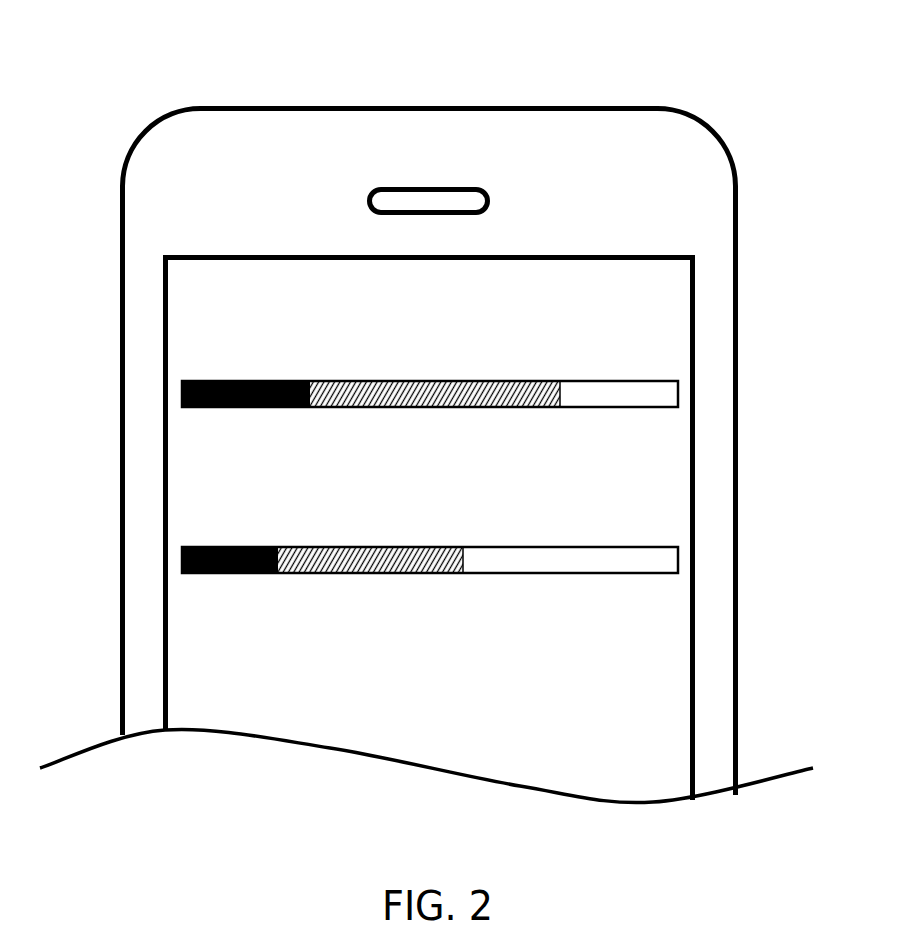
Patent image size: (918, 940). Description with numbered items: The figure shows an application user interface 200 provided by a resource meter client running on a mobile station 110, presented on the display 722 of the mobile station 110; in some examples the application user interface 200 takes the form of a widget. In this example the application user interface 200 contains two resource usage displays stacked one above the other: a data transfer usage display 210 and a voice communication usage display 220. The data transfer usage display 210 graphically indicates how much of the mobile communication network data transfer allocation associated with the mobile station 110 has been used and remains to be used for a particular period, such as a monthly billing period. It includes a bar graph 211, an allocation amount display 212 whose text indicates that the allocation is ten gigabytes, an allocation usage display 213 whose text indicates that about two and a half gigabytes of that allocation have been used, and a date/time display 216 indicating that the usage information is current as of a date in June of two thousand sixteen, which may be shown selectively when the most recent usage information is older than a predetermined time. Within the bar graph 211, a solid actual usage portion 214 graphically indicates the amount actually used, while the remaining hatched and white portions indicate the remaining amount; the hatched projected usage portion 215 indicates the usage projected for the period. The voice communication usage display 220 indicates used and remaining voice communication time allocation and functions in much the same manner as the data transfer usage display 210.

The mobile station 110 is at (370, 105).
The display 722 is at (513, 280).
The application user interface 200 is at (428, 451).
The data transfer usage display 210 is at (355, 393).
The voice communication usage display 220 is at (103, 508).
The bar graph 211 is at (667, 381).
The allocation amount display 212 is at (637, 442).
The allocation usage display 213 is at (245, 343).
The actual usage portion 214 is at (307, 381).
The projected usage portion 215 is at (510, 407).
The date/time display 216 is at (277, 437).